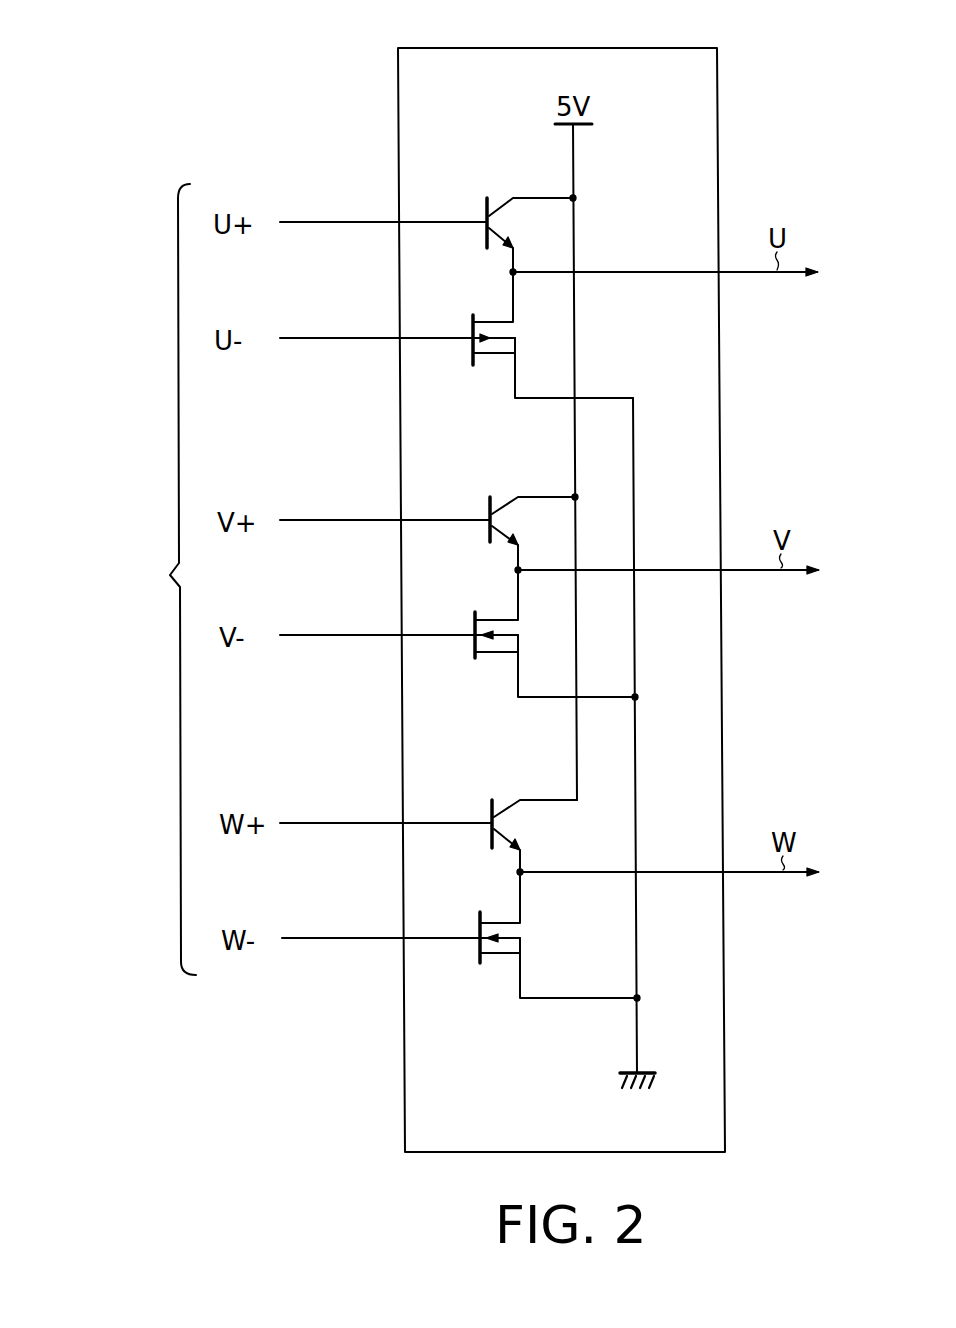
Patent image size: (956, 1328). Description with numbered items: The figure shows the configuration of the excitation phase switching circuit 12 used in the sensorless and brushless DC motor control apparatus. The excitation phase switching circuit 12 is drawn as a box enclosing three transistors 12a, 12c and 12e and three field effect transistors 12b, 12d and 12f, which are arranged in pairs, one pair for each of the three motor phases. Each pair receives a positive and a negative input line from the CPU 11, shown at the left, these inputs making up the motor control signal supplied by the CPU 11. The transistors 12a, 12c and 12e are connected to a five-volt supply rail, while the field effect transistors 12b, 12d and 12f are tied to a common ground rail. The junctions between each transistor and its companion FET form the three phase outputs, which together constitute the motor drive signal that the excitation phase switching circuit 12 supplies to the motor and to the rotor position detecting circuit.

The CPU 11 is at (124, 579).
The excitation phase switching circuit 12 is at (607, 47).
The transistor 12a is at (503, 197).
The field effect transistor 12b is at (483, 314).
The transistor 12c is at (506, 497).
The field effect transistor 12d is at (484, 609).
The transistor 12e is at (508, 802).
The field effect transistor 12f is at (494, 918).